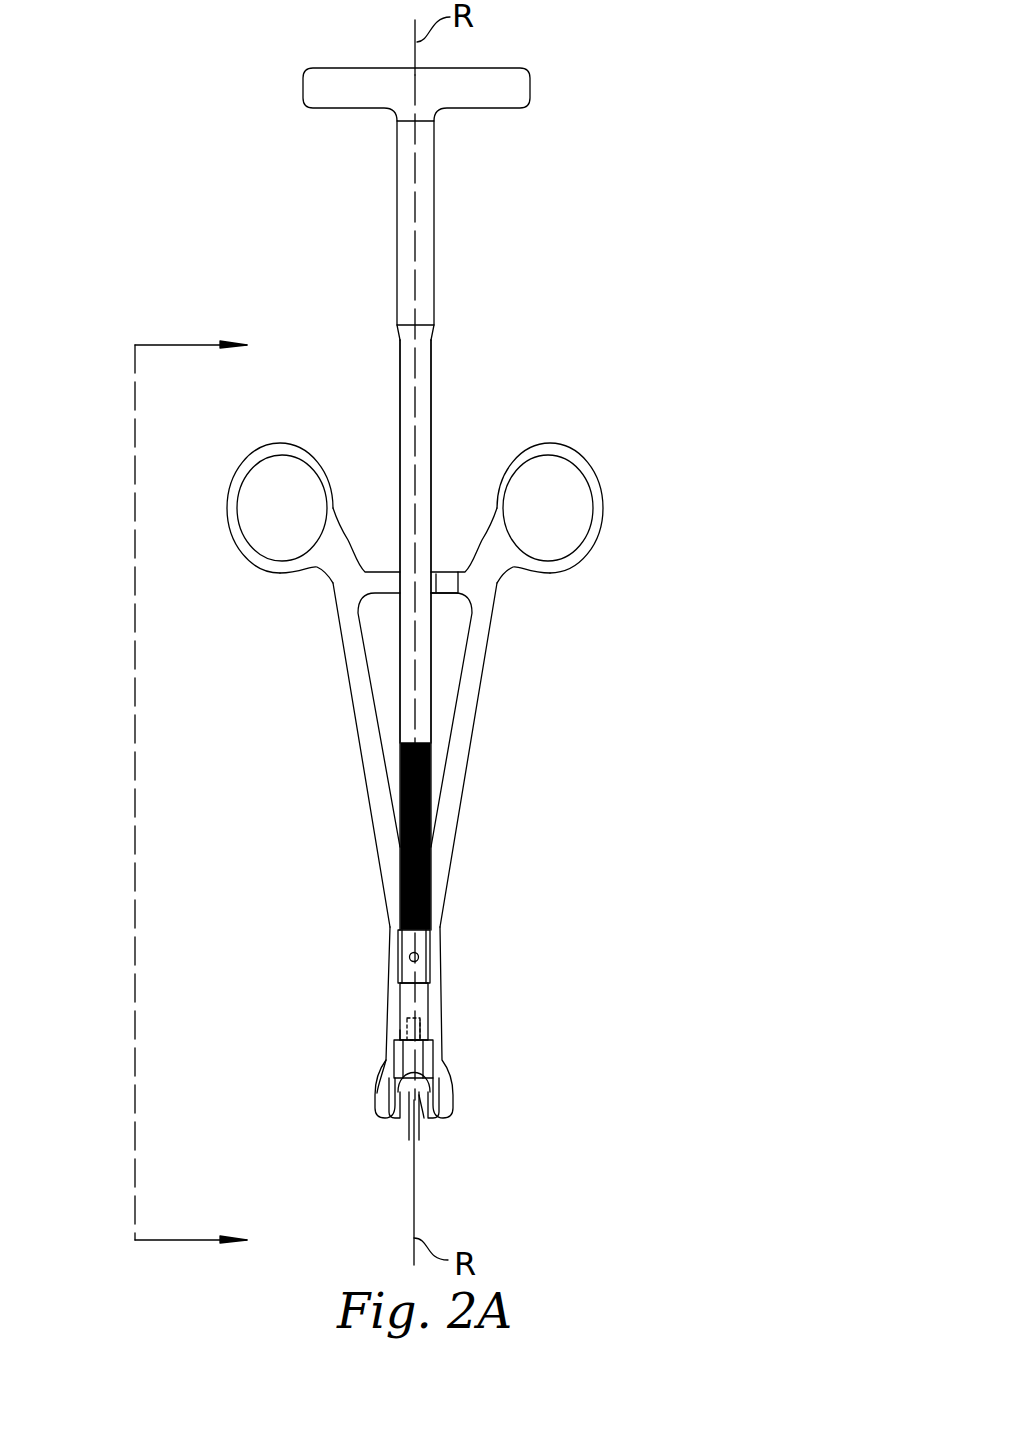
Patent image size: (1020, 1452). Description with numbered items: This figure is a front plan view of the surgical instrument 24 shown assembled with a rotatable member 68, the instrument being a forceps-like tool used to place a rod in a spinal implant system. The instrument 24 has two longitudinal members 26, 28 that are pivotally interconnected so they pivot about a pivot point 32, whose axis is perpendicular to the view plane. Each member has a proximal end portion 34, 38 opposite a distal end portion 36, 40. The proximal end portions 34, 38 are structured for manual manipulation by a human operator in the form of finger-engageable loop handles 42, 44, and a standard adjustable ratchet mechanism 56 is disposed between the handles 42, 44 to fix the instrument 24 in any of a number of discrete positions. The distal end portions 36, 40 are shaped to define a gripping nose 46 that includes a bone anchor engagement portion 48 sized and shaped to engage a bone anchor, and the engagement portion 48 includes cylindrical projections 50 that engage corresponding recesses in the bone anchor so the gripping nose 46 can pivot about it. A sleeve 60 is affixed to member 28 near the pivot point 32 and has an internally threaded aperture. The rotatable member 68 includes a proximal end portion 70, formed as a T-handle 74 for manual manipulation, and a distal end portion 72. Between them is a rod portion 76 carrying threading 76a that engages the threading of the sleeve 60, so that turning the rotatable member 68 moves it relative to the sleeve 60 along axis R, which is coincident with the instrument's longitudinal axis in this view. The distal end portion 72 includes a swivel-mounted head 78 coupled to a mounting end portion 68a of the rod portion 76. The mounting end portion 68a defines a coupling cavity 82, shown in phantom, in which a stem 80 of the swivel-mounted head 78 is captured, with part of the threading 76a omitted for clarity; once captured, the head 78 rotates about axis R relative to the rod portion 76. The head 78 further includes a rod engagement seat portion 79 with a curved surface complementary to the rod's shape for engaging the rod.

The surgical instrument 24 is at (193, 443).
The longitudinal member 26 is at (358, 747).
The longitudinal member 28 is at (467, 767).
The pivot point 32 is at (408, 962).
The proximal end portion 34 is at (248, 453).
The distal end portion 36 is at (457, 1113).
The proximal end portion 38 is at (573, 447).
The distal end portion 40 is at (375, 1113).
The finger-engageable loop handle 42 is at (233, 533).
The finger-engageable loop handle 44 is at (587, 553).
The gripping nose 46 is at (377, 1093).
The bone anchor engagement portion 48 is at (407, 1100).
The cylindrical projections 50 is at (443, 1130).
The adjustable ratchet mechanism 56 is at (433, 570).
The sleeve 60 is at (432, 962).
The rotatable member 68 is at (431, 398).
The mounting end portion 68a is at (427, 1028).
The proximal end portion 70 is at (437, 115).
The distal end portion 72 is at (428, 997).
The T-handle 74 is at (500, 68).
The rod portion 76 is at (431, 677).
The threading 76a is at (431, 817).
The swivel-mounted head 78 is at (397, 1068).
The rod engagement seat portion 79 is at (419, 1097).
The stem 80 is at (427, 1030).
The coupling cavity 82 is at (400, 1037).